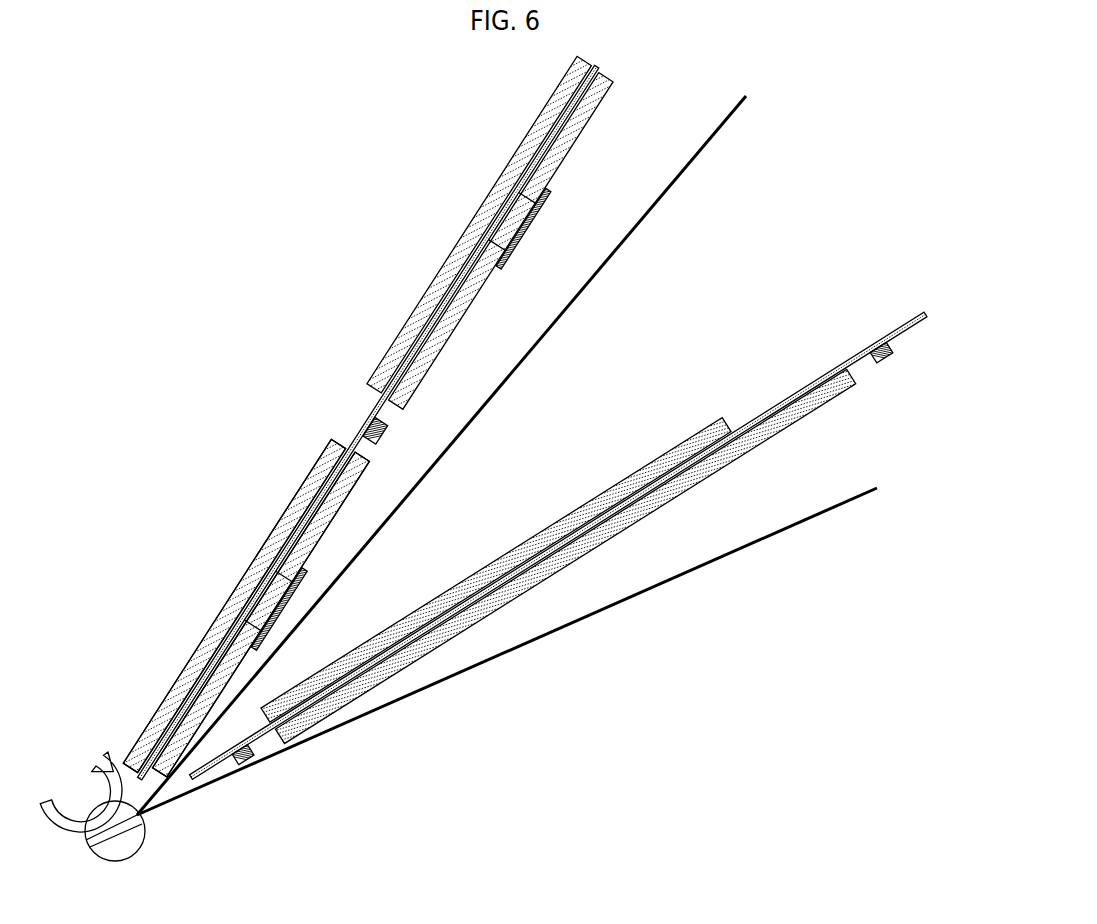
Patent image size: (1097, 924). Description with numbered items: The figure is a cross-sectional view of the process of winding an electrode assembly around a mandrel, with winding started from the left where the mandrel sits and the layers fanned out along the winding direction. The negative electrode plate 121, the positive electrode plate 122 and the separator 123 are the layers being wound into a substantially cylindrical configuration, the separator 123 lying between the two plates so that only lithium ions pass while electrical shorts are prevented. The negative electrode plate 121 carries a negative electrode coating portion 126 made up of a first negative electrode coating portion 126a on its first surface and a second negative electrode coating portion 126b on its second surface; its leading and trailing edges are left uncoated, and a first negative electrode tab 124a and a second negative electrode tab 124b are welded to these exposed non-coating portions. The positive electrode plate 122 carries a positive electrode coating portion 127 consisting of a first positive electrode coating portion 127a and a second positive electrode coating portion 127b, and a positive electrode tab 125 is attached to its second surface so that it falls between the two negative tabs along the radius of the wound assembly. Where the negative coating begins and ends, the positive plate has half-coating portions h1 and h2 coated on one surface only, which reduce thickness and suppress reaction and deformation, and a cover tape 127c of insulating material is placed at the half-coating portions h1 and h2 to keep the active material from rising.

The negative electrode plate 121 is at (558, 545).
The positive electrode plate 122 is at (246, 612).
The separator 123 is at (725, 128).
The first negative electrode tab 124a is at (247, 752).
The second negative electrode tab 124b is at (885, 350).
The positive electrode tab 125 is at (377, 426).
The negative electrode coating portion 126 is at (558, 546).
The first negative electrode coating portion 126a is at (495, 570).
The second negative electrode coating portion 126b is at (563, 558).
The positive electrode coating portion 127 is at (370, 426).
The first positive electrode coating portion 127a is at (355, 417).
The second positive electrode coating portion 127b is at (381, 426).
The cover tape 127c is at (368, 422).
The half-coating portion h1 is at (270, 604).
The half-coating portion h2 is at (515, 222).